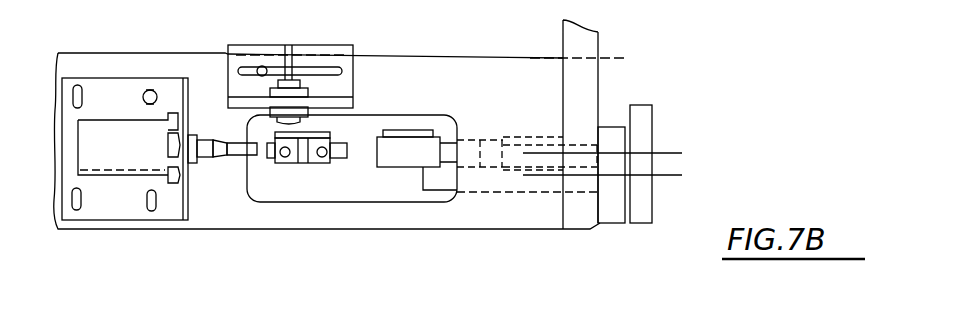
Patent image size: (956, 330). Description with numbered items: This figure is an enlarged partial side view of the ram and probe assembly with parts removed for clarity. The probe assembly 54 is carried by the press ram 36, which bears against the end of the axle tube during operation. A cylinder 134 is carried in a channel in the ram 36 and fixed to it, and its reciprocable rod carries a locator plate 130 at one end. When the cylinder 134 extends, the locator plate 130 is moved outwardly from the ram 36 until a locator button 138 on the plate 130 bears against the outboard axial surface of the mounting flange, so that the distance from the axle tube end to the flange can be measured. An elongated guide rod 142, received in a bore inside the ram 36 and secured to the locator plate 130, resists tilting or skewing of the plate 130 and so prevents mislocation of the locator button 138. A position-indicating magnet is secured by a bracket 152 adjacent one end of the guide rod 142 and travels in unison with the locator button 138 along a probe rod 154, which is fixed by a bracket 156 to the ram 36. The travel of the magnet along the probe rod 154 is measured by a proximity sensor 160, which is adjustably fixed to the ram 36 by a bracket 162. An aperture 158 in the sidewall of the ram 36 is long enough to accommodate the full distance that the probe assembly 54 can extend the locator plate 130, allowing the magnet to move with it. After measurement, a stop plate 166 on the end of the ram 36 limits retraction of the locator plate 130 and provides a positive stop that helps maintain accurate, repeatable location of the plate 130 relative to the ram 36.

The press ram 36 is at (518, 229).
The probe assembly 54 is at (203, 245).
The locator plate 130 is at (643, 218).
The cylinder 134 is at (480, 196).
The locator button 138 is at (655, 114).
The guide rod 142 is at (518, 136).
The bracket 152 is at (300, 174).
The probe rod 154 is at (232, 145).
The bracket 156 is at (117, 207).
The aperture 158 is at (407, 118).
The proximity sensor 160 is at (322, 115).
The bracket 162 is at (257, 50).
The stop plate 166 is at (617, 220).